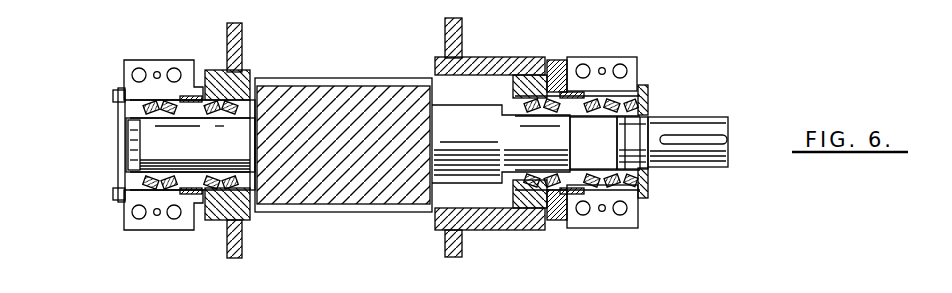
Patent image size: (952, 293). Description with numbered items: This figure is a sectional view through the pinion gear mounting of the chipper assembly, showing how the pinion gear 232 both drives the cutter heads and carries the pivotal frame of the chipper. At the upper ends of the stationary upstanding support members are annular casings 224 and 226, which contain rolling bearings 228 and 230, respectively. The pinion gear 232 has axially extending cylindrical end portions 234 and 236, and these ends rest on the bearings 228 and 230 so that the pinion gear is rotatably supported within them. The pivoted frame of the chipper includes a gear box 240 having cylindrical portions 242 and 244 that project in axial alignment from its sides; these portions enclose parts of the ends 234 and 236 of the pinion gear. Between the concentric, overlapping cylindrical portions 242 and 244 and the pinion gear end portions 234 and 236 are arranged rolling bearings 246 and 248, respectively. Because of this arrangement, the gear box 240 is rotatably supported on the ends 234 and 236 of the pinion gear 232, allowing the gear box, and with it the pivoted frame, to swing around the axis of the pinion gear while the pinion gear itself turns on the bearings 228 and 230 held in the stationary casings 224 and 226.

The annular casing 224 is at (154, 60).
The annular casing 226 is at (611, 64).
The rolling bearing 228 is at (148, 100).
The rolling bearing 230 is at (606, 133).
The pinion gear 232 is at (357, 90).
The cylindrical end portion 234 is at (153, 137).
The cylindrical end portion 236 is at (645, 117).
The gear box 240 is at (455, 29).
The cylindrical portion 242 is at (244, 73).
The cylindrical portion 244 is at (503, 63).
The rolling bearing 246 is at (255, 96).
The rolling bearing 248 is at (557, 80).